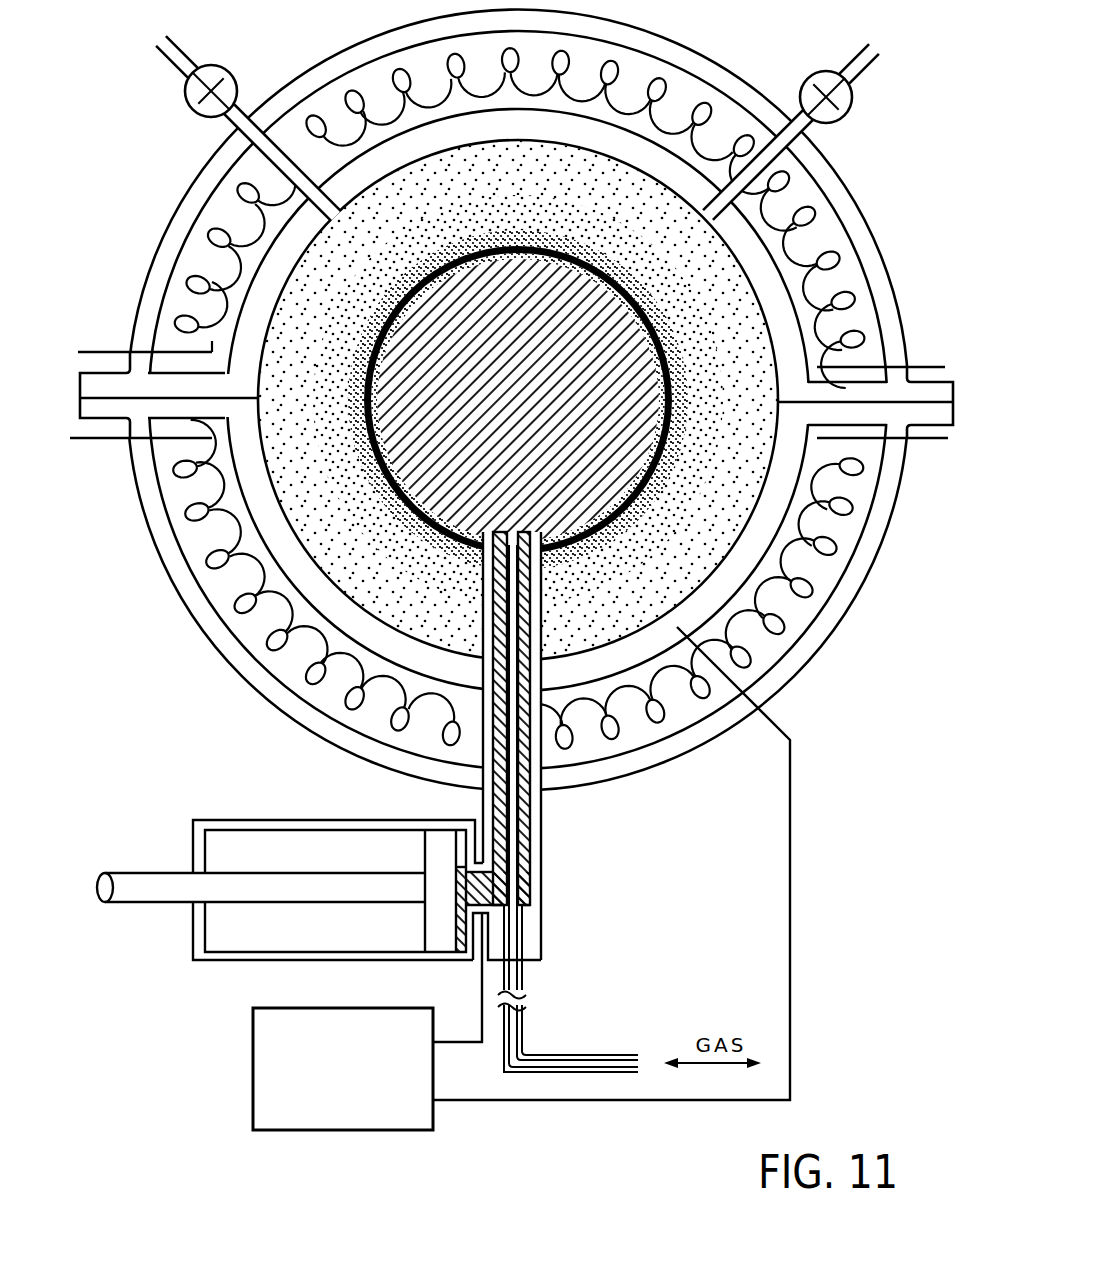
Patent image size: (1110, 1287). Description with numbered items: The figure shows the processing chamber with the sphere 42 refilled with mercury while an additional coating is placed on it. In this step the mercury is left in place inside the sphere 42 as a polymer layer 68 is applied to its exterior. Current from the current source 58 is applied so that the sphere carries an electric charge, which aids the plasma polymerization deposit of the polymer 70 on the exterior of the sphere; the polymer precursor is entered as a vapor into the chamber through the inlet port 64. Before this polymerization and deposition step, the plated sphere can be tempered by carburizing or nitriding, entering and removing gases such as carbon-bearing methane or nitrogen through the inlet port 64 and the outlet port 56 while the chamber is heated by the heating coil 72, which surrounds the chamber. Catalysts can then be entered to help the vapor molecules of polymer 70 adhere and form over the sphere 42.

The sphere 42 is at (640, 474).
The outlet port 56 is at (786, 134).
The current source 58 is at (262, 1045).
The inlet port 64 is at (194, 50).
The polymer layer 68 is at (682, 389).
The polymer 70 is at (583, 212).
The heating coil 72 is at (822, 588).